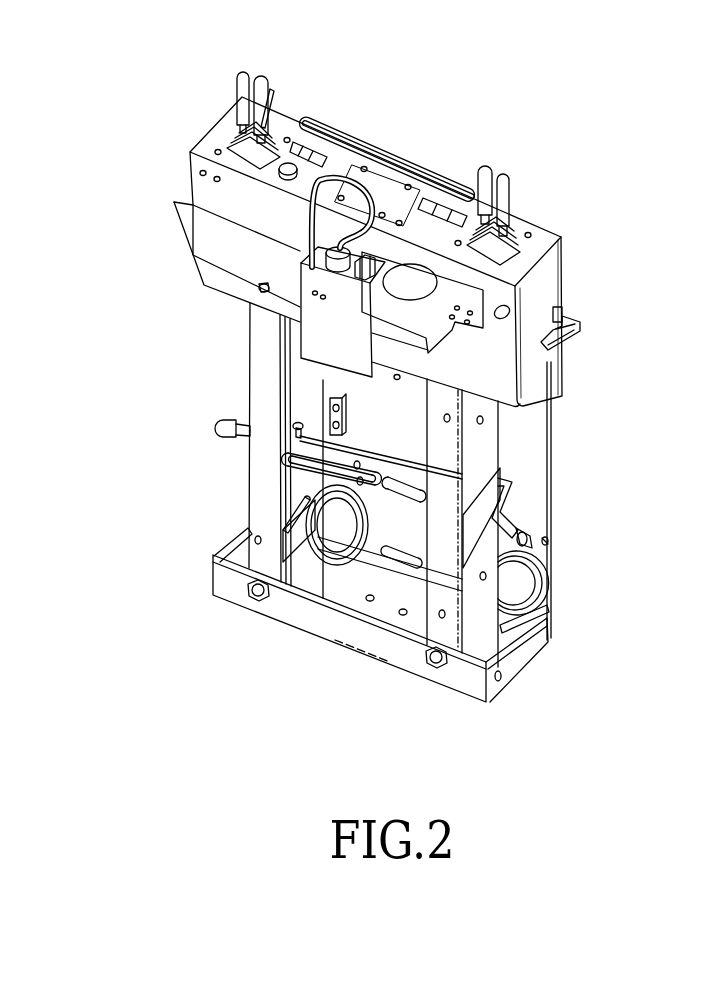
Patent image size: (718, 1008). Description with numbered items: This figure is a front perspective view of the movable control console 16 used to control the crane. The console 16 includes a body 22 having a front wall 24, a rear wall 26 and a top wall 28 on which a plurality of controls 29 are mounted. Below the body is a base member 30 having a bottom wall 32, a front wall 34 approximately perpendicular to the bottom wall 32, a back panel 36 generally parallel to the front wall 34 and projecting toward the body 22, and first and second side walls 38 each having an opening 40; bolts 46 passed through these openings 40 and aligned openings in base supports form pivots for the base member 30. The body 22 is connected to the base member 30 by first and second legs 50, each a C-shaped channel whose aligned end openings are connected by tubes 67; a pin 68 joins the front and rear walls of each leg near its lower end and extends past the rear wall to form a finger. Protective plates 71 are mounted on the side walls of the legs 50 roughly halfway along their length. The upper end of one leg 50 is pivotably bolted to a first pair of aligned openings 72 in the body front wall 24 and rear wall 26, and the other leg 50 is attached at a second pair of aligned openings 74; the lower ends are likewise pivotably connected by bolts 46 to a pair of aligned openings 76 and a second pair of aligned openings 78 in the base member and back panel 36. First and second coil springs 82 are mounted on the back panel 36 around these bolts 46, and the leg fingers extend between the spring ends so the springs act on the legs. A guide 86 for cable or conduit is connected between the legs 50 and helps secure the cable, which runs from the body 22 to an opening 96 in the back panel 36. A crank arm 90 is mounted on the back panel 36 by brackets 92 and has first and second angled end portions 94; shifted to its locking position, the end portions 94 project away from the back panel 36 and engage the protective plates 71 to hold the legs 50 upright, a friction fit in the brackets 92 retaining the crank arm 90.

The console 16 is at (163, 372).
The body 22 is at (576, 245).
The front wall 24 is at (202, 268).
The rear wall 26 is at (550, 272).
The top wall 28 is at (541, 235).
The controls 29 is at (266, 80).
The base member 30 is at (574, 594).
The bottom wall 32 is at (525, 665).
The front wall 34 is at (473, 685).
The back panel 36 is at (550, 511).
The side walls 38 is at (232, 552).
The opening 40 is at (500, 680).
The bolts 46 is at (258, 292).
The legs 50 is at (258, 497).
The tubes 67 is at (297, 585).
The pin 68 is at (305, 572).
The protective plates 71 is at (250, 452).
The first pair of aligned openings 72 is at (260, 287).
The second pair of aligned openings 74 is at (482, 366).
The pair of aligned openings 76 is at (272, 603).
The second pair of aligned openings 78 is at (437, 668).
The coil springs 82 is at (330, 555).
The guide 86 is at (290, 452).
The crank arm 90 is at (510, 488).
The brackets 92 is at (340, 397).
The angled end portions 94 is at (546, 541).
The opening 96 is at (400, 565).